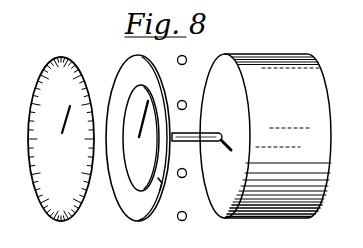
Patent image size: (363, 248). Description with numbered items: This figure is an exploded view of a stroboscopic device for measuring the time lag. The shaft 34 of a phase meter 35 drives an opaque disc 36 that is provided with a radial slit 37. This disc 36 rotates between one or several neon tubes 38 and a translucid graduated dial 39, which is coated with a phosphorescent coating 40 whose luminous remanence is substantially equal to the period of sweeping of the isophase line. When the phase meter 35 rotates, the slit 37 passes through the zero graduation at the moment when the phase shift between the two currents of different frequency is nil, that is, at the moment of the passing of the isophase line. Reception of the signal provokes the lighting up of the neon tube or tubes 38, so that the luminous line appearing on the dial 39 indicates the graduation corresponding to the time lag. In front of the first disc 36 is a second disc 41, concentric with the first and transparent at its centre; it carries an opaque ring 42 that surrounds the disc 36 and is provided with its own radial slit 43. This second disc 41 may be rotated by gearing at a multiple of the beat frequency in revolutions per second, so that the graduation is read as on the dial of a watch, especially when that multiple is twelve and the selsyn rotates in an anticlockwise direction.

The shaft 34 is at (200, 131).
The phase meter 35 is at (305, 103).
The opaque disc 36 is at (135, 157).
The radial slit 37 is at (142, 119).
The neon tubes 38 is at (195, 58).
The translucid graduated dial 39 is at (46, 147).
The phosphorescent coating 40 is at (60, 138).
The second disc 41 is at (148, 226).
The opaque ring 42 is at (135, 200).
The radial slit 43 is at (159, 185).